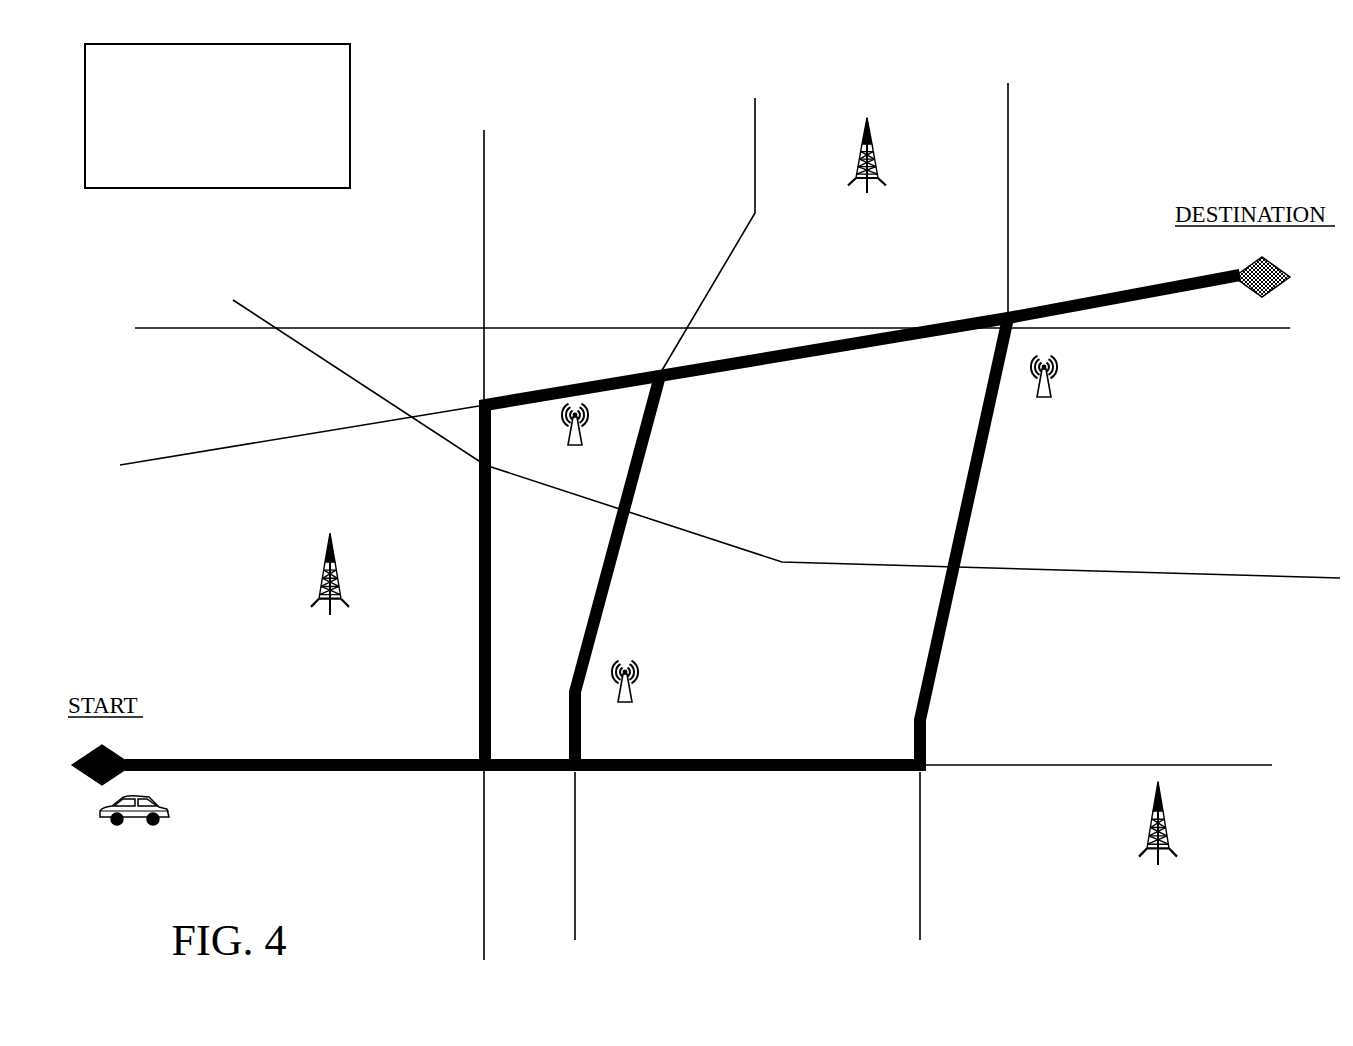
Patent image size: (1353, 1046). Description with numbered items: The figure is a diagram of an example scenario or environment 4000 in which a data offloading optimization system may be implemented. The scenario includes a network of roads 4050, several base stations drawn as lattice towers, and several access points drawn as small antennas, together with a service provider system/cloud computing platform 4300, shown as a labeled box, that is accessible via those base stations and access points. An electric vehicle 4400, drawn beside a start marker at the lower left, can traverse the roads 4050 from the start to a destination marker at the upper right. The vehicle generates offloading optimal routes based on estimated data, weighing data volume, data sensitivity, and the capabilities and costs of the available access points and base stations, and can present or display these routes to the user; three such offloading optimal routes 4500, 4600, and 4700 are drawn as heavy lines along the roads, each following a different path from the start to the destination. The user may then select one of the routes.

The scenario or environment 4000 is at (1215, 150).
The roads 4050 is at (482, 863).
The service provider system/cloud computing platform 4300 is at (194, 224).
The electric vehicle 4400 is at (157, 861).
The offloading optimal route 4500 is at (765, 772).
The offloading optimal route 4600 is at (620, 547).
The offloading optimal route 4700 is at (614, 377).